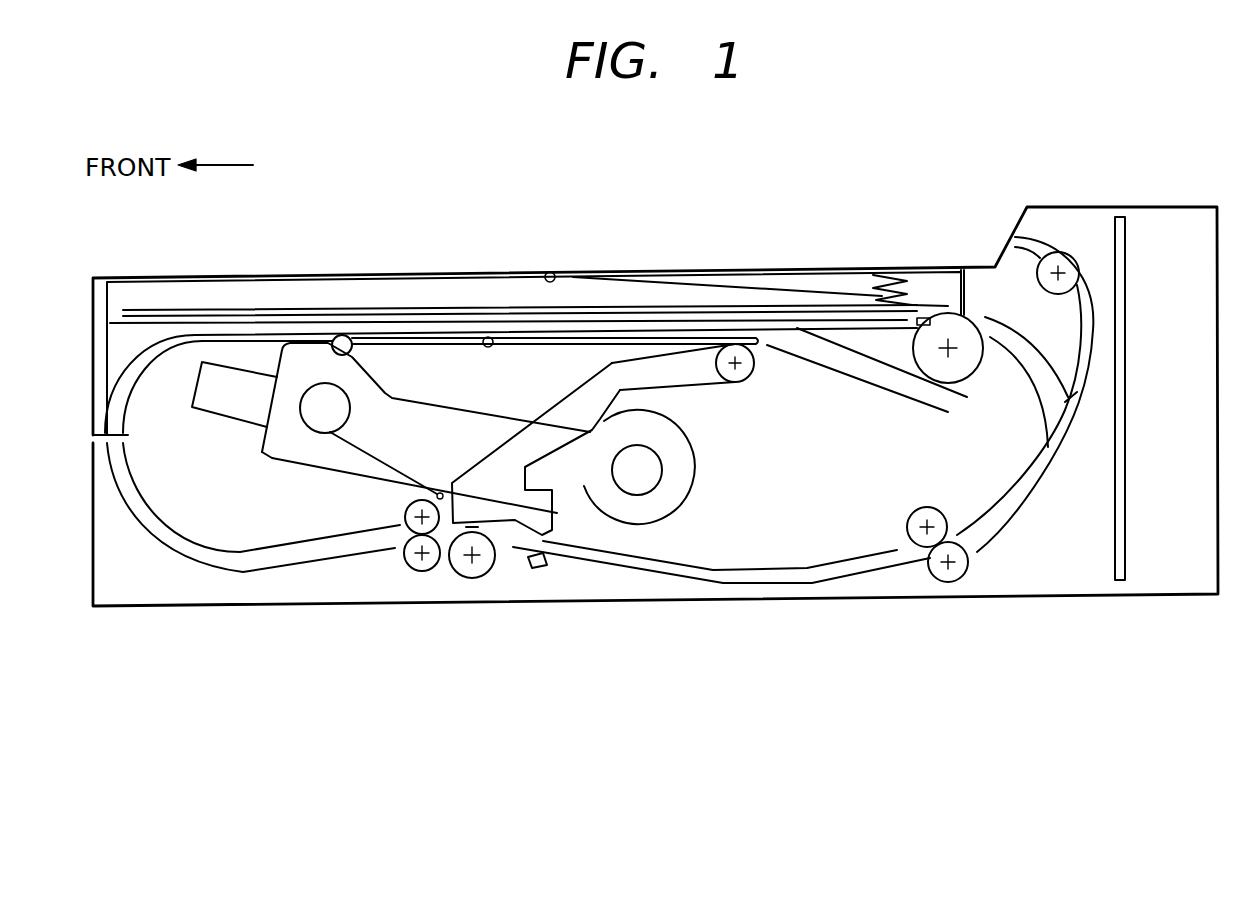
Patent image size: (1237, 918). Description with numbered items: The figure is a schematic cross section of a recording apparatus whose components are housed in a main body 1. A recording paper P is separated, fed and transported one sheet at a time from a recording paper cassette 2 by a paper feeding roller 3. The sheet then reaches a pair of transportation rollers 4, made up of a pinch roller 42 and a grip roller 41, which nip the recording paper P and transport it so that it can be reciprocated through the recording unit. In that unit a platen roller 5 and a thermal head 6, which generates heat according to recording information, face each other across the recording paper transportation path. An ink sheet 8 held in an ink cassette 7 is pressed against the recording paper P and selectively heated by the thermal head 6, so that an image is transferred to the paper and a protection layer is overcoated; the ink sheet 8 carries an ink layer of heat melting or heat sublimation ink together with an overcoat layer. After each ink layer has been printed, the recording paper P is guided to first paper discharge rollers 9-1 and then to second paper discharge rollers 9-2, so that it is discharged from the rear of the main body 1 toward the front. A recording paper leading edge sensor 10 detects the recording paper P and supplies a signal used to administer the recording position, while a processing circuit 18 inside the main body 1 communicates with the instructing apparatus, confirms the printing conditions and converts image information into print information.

The main body 1 is at (1048, 220).
The recording paper cassette 2 is at (102, 294).
The paper feeding roller 3 is at (963, 340).
The pair of transportation rollers 4 is at (389, 614).
The grip roller 41 is at (413, 568).
The pinch roller 42 is at (406, 540).
The platen roller 5 is at (468, 575).
The thermal head 6 is at (565, 545).
The ink cassette 7 is at (318, 368).
The ink sheet 8 is at (313, 495).
The first paper discharge rollers 9-1 is at (948, 582).
The second paper discharge rollers 9-2 is at (1067, 263).
The recording paper leading edge sensor 10 is at (536, 570).
The processing circuit 18 is at (1123, 247).
The recording paper P is at (457, 309).